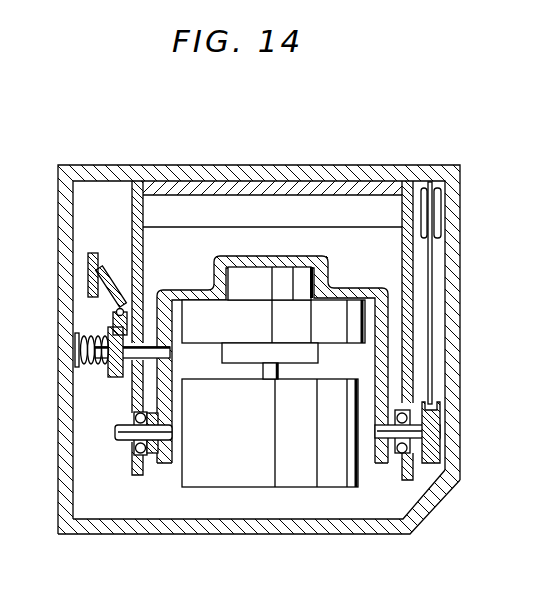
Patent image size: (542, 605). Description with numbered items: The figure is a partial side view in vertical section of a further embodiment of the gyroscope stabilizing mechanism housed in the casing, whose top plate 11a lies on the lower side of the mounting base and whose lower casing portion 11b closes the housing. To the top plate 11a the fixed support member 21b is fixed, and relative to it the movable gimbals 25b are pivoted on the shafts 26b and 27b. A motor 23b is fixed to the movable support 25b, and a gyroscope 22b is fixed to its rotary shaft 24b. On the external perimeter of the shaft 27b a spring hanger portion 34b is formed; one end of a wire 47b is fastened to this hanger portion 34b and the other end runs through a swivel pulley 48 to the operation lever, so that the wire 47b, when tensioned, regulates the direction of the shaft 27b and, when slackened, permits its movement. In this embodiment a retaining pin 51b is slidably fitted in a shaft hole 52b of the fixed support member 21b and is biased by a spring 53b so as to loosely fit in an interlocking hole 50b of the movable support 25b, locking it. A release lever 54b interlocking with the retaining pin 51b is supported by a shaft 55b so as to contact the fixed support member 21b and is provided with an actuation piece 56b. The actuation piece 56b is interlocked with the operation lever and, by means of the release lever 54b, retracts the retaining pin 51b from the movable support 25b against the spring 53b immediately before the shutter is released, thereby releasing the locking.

The top plate 11a is at (355, 172).
The housing lower casing 11b is at (268, 535).
The fixed support member 21b is at (412, 335).
The gyroscope 22b is at (257, 465).
The motor 23b is at (338, 312).
The rotary shaft 24b is at (280, 368).
The movable gimbals 25b is at (197, 289).
The shaft 26b is at (123, 441).
The shaft 27b is at (443, 453).
The spring hanger portion 34b is at (440, 400).
The wire 47b is at (432, 298).
The swivel pulley 48 is at (442, 197).
The interlocking hole 50b is at (168, 349).
The retaining pin 51b is at (156, 330).
The shaft hole 52b is at (141, 383).
The spring 53b is at (90, 368).
The release lever 54b is at (128, 302).
The shaft 55b is at (116, 313).
The actuation piece 56b is at (93, 253).